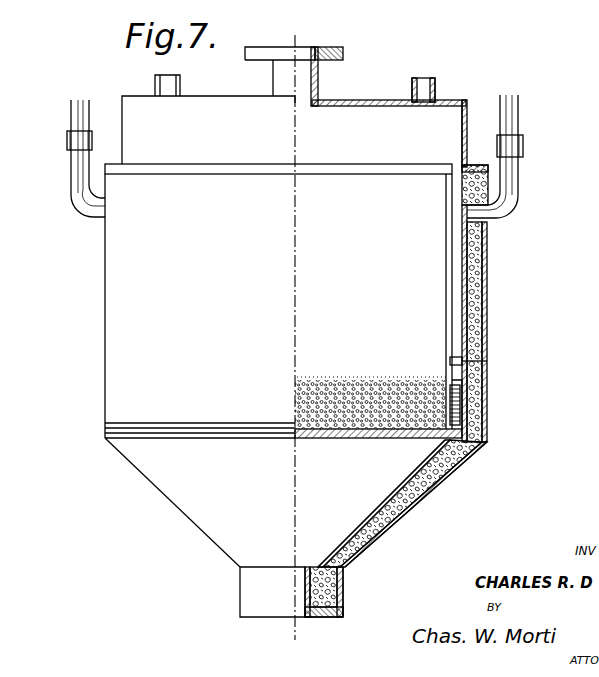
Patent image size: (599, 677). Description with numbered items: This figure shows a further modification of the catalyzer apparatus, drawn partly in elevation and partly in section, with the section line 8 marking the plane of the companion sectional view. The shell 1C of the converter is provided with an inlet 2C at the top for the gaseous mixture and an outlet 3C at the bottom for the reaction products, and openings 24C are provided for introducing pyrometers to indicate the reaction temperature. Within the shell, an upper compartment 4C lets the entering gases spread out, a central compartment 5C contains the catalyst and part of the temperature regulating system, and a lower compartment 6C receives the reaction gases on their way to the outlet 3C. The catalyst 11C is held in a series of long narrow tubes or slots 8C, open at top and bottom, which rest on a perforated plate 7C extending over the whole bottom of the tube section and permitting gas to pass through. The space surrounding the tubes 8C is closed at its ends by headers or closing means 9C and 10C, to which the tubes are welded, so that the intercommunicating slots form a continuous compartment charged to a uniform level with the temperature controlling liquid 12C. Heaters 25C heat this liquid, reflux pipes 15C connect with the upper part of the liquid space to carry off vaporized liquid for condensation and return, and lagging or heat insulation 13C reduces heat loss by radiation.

The inlet 2C is at (310, 56).
The pyrometer opening 24C is at (180, 88).
The reflux pipe 15C is at (86, 93).
The upper compartment 4C is at (294, 131).
The upper header 10C is at (458, 187).
The shell 1C is at (483, 268).
The central compartment 5C is at (442, 233).
The catalyst tube 8C is at (442, 307).
The lower header 9C is at (485, 418).
The temperature controlling liquid 12C is at (550, 368).
The heat insulating lagging 13C is at (483, 392).
The electric heater 25C is at (483, 402).
The catalyst 11C is at (320, 388).
The perforated plate 7C is at (358, 434).
The lower compartment 6C is at (296, 502).
The outlet 3C is at (298, 607).
The section line 8 is at (107, 170).